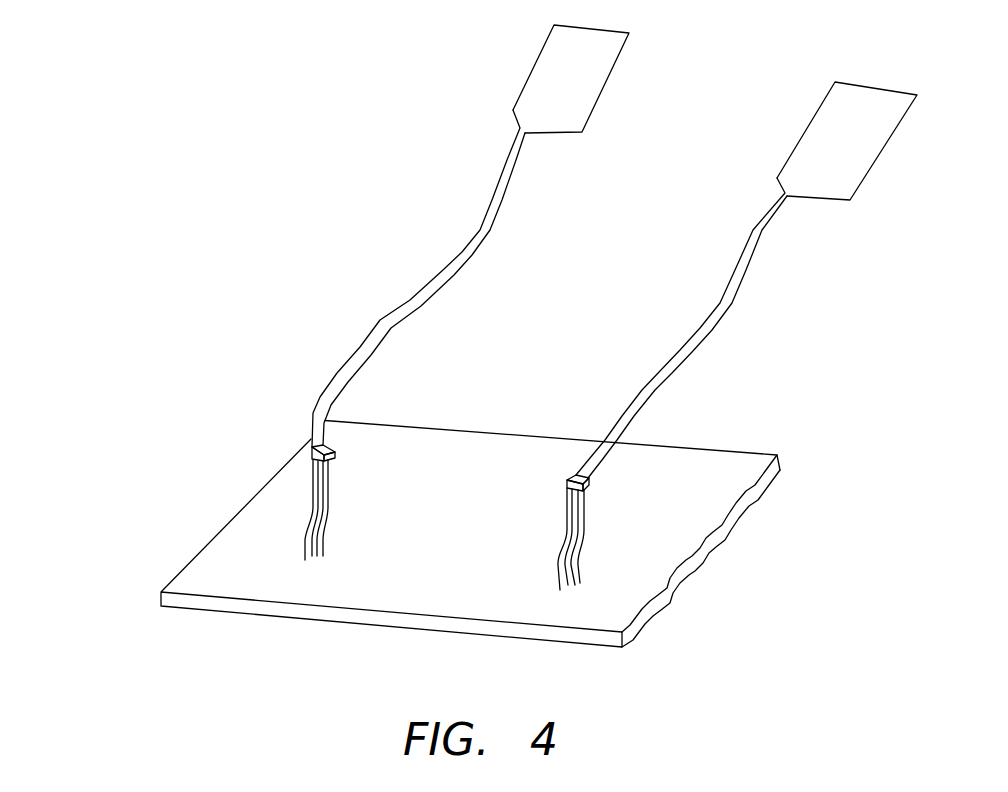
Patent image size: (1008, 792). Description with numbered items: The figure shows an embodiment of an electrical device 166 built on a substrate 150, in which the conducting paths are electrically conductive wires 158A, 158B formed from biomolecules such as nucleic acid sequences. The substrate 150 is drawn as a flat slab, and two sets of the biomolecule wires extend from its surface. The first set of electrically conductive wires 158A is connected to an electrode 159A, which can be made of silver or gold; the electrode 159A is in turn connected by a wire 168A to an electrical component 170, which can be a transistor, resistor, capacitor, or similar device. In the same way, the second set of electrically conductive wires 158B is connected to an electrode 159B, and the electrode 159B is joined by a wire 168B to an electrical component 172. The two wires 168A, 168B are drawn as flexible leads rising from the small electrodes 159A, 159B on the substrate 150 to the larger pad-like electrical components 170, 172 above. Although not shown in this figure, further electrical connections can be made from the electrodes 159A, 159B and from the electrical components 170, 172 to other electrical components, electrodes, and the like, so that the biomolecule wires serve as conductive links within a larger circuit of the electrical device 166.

The electrical device 166 is at (322, 97).
The substrate 150 is at (192, 546).
The electrical component 170 is at (523, 92).
The electrical component 172 is at (798, 145).
The wire 168A is at (440, 270).
The wire 168B is at (720, 303).
The electrode 159A is at (335, 451).
The electrode 159B is at (590, 478).
The electrically conductive wires 158A is at (308, 500).
The electrically conductive wires 158B is at (583, 535).